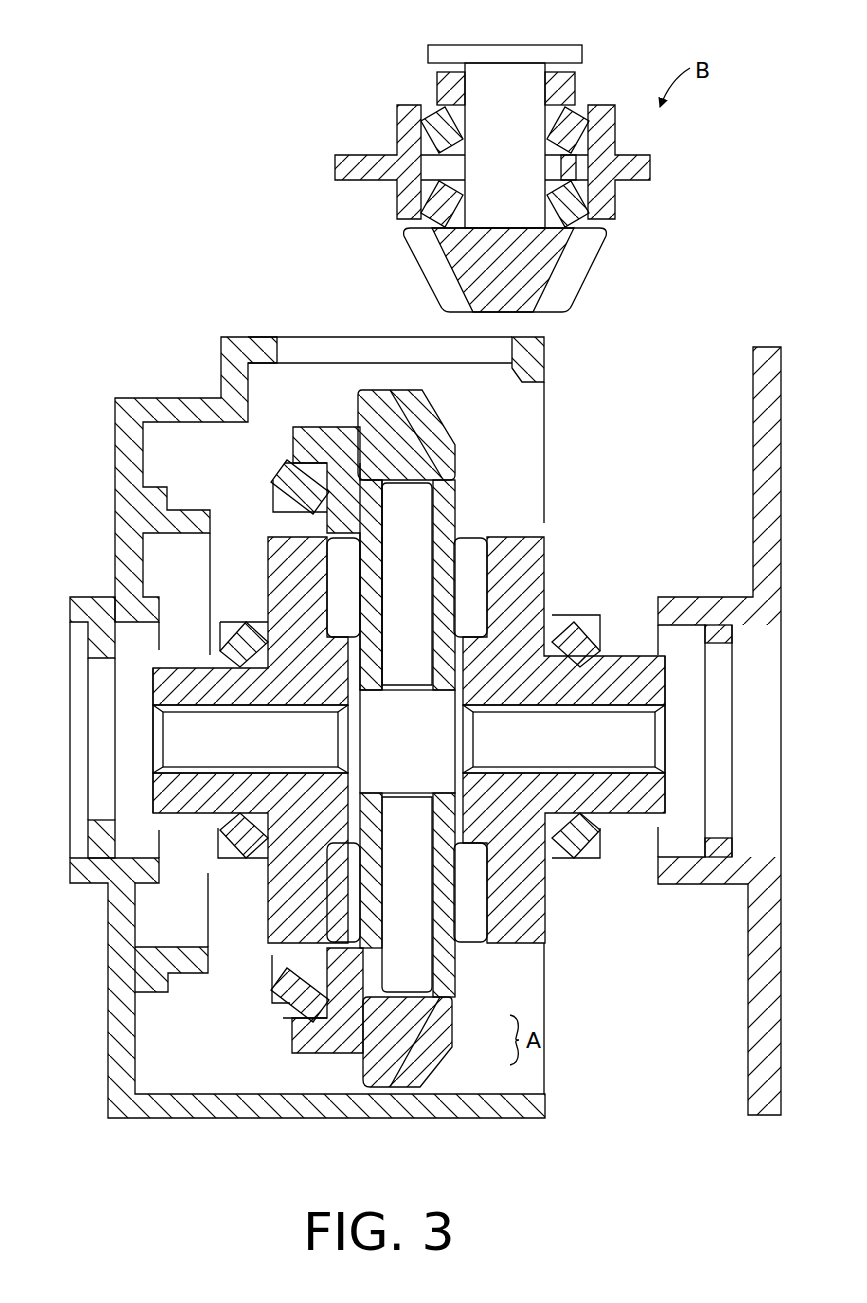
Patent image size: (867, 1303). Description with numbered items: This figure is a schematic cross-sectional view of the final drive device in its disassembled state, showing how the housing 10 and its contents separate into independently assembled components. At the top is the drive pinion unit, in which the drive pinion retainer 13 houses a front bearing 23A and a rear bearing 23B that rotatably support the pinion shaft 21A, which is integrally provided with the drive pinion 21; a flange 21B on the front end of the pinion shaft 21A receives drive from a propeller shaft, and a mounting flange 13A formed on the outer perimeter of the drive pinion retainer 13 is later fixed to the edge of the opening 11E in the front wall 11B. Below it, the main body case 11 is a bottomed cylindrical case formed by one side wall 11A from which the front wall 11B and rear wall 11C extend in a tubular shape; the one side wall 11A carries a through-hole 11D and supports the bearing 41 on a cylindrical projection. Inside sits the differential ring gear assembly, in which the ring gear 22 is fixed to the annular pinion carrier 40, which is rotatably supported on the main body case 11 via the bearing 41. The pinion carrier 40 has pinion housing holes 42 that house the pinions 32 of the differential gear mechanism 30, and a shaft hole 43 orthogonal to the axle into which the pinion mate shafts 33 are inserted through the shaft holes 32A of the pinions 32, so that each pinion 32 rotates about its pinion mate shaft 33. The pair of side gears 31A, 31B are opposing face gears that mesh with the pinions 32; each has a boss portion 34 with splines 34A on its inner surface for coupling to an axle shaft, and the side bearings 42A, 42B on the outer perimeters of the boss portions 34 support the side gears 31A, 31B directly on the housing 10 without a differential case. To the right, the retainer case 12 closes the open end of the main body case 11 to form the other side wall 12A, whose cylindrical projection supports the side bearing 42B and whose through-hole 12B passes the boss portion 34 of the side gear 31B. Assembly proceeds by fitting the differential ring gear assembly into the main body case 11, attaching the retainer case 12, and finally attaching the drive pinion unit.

The housing 10 is at (196, 337).
The main body case 11 is at (280, 725).
The one side wall 11A is at (122, 557).
The front wall 11B is at (160, 410).
The rear wall 11C is at (327, 1120).
The through-hole 11D is at (105, 688).
The opening 11E is at (347, 352).
The retainer case 12 is at (720, 696).
The other side wall 12A is at (766, 392).
The through-hole 12B is at (713, 670).
The drive pinion retainer 13 is at (398, 112).
The mounting flange 13A is at (640, 171).
The drive pinion 21 is at (562, 287).
The pinion shaft 21A is at (508, 85).
The flange 21B is at (460, 53).
The ring gear 22 is at (425, 1050).
The front bearing 23A is at (575, 120).
The rear bearing 23B is at (568, 203).
The differential gear mechanism 30 is at (472, 985).
The side gear 31A is at (290, 553).
The side gear 31B is at (547, 547).
The pinion 32 is at (457, 537).
The shaft hole 32A is at (386, 582).
The pinion mate shaft 33 is at (407, 737).
The boss portion 34 is at (193, 680).
The splines 34A is at (409, 739).
The pinion carrier 40 is at (325, 422).
The bearing 41 is at (288, 480).
The pinion housing hole 42 is at (370, 840).
The side bearing 42A is at (240, 650).
The side bearing 42B is at (576, 632).
The shaft hole 43 is at (383, 968).